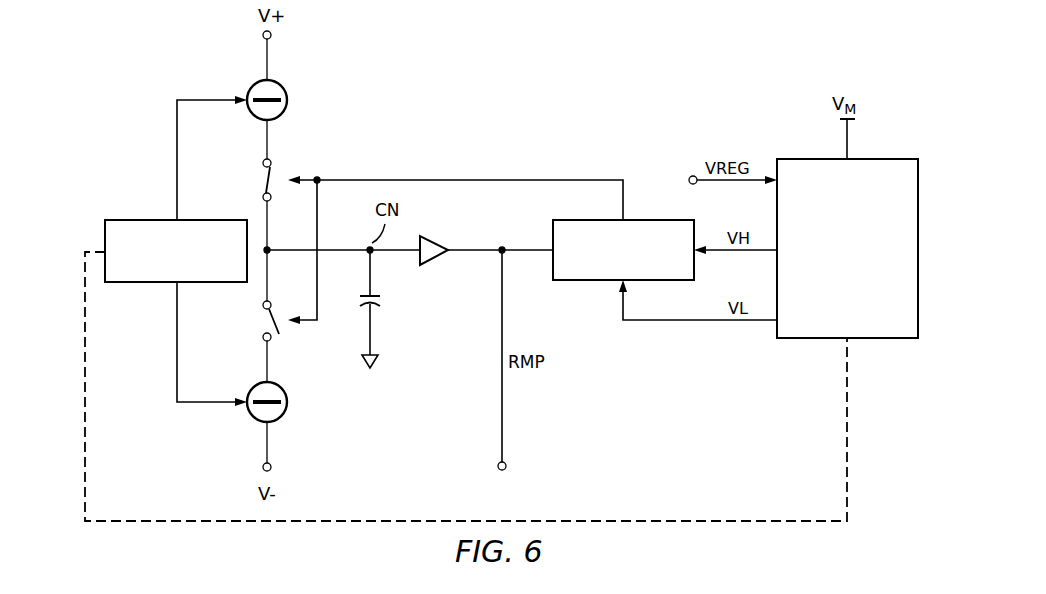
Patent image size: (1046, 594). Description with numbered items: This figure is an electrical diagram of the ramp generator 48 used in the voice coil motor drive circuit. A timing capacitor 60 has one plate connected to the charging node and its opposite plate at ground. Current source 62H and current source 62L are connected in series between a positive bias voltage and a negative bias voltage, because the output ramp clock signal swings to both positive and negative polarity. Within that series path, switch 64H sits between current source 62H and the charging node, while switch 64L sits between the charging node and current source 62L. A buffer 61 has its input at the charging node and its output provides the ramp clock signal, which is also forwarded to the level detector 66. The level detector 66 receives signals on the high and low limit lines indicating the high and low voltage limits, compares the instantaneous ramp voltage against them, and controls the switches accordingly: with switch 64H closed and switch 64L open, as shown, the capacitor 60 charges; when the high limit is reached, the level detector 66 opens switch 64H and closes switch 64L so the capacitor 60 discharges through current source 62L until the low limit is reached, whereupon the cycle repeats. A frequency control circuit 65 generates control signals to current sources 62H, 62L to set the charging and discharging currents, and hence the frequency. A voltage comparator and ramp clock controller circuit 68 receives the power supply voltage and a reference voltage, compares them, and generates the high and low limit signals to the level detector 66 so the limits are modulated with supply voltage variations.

The ramp generator 48 is at (632, 50).
The timing capacitor 60 is at (380, 305).
The buffer 61 is at (437, 240).
The current source 62H is at (274, 82).
The current source 62L is at (280, 422).
The switch 64H is at (262, 173).
The switch 64L is at (262, 326).
The frequency control circuit 65 is at (157, 219).
The level detector 66 is at (643, 218).
The voltage comparator and ramp clock controller circuit 68 is at (873, 159).